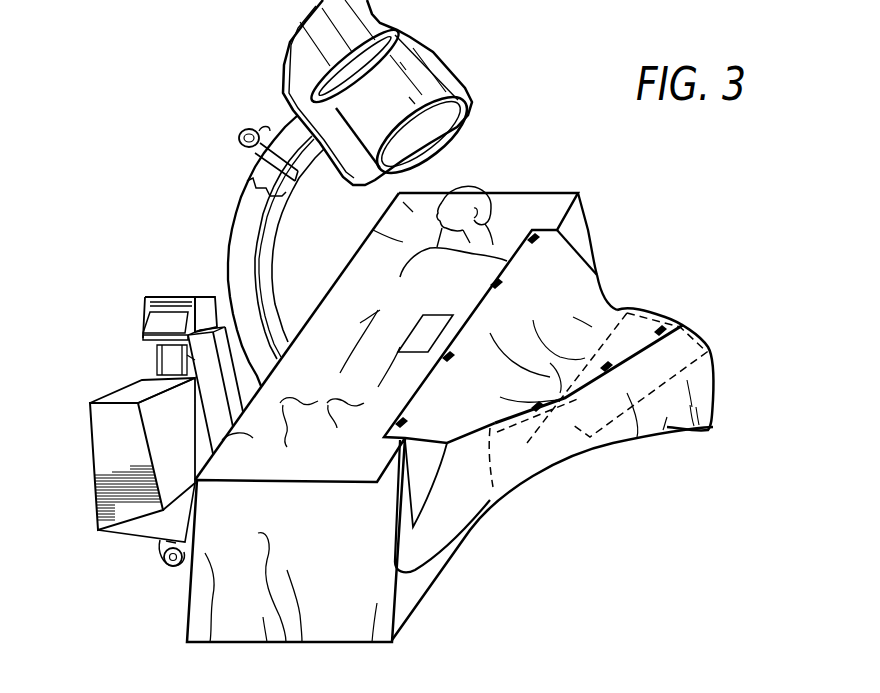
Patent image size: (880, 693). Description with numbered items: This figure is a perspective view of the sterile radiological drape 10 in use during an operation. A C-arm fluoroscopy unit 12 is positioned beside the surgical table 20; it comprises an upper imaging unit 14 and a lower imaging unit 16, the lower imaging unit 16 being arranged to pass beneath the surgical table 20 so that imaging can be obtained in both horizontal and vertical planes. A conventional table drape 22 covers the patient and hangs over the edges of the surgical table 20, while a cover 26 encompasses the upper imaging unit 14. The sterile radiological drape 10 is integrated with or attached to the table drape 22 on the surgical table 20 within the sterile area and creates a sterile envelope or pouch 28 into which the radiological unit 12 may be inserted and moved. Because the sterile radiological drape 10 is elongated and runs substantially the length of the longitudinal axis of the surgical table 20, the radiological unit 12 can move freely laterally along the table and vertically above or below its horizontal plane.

The sterile radiological drape 10 is at (722, 343).
The C-arm fluoroscopy unit 12 is at (270, 50).
The upper imaging unit 14 is at (433, 82).
The lower imaging unit 16 is at (582, 422).
The surgical table 20 is at (223, 545).
The table drape 22 is at (508, 212).
The cover 26 is at (347, 177).
The sterile envelope or pouch 28 is at (535, 355).